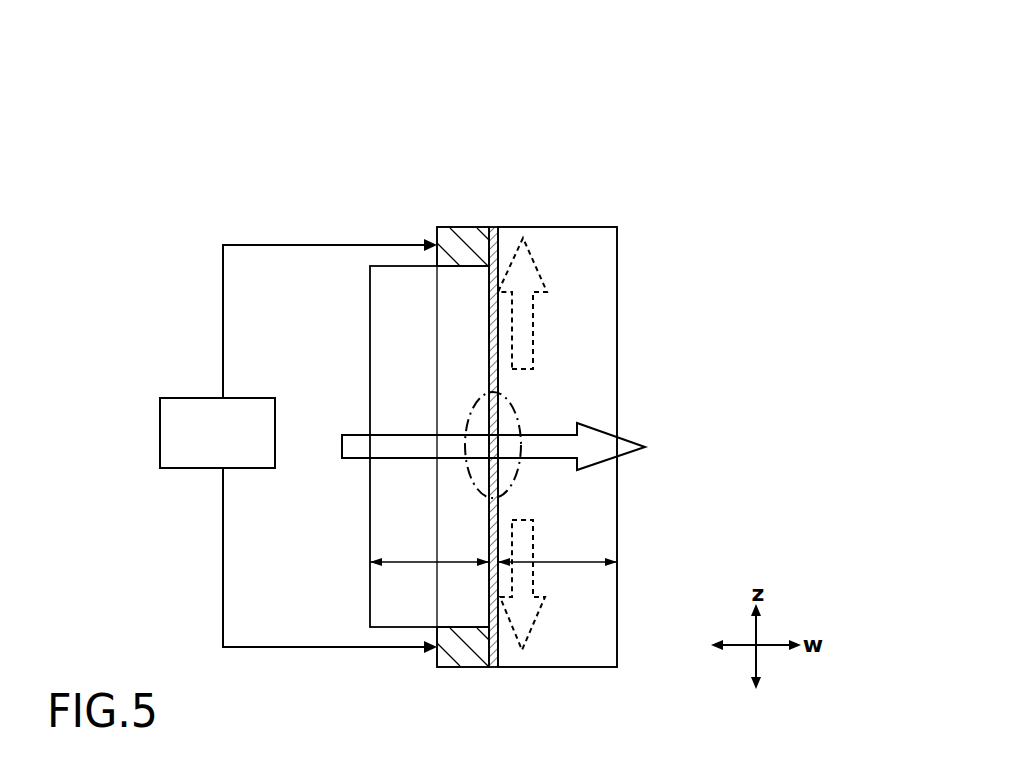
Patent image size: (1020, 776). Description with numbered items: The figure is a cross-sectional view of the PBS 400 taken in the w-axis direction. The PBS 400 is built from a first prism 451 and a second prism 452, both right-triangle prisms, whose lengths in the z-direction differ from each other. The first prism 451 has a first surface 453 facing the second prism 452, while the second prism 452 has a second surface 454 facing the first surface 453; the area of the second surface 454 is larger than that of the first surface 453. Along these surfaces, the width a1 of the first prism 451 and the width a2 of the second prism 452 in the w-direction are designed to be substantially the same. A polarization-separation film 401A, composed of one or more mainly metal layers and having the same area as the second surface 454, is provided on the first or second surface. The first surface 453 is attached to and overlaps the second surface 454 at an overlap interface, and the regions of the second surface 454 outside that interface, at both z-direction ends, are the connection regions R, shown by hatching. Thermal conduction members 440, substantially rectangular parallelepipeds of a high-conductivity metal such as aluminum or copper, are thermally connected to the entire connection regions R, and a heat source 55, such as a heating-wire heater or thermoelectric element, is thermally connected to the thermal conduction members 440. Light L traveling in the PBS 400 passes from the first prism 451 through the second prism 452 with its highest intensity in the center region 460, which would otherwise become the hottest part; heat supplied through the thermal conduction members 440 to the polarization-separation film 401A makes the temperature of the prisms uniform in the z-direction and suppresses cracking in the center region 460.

The PBS 400 is at (487, 115).
The polarization-separation film 401A is at (493, 227).
The thermal conduction members 440 is at (449, 238).
The connection regions R is at (488, 245).
The first prism 451 is at (383, 297).
The second prism 452 is at (600, 255).
The first surface 453 is at (497, 378).
The second surface 454 is at (492, 318).
The center region 460 is at (518, 477).
The heat source 55 is at (182, 397).
The light L is at (505, 446).
The width of the first prism a1 is at (429, 577).
The width of the second prism a2 is at (557, 577).